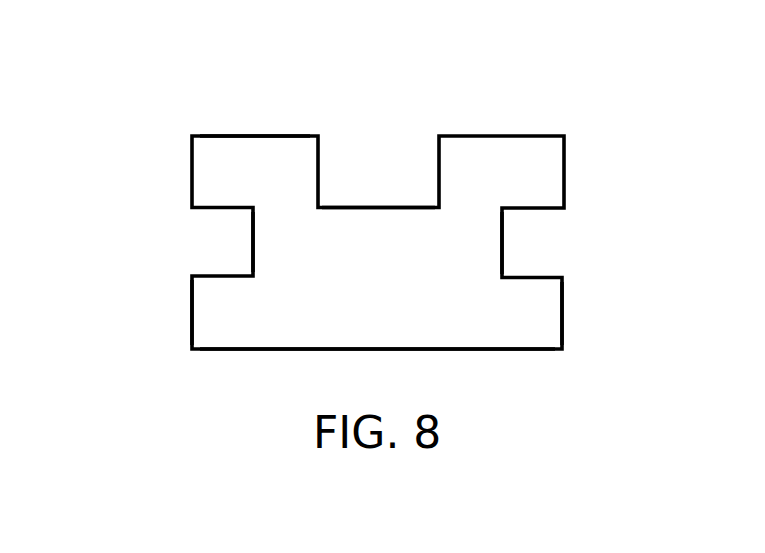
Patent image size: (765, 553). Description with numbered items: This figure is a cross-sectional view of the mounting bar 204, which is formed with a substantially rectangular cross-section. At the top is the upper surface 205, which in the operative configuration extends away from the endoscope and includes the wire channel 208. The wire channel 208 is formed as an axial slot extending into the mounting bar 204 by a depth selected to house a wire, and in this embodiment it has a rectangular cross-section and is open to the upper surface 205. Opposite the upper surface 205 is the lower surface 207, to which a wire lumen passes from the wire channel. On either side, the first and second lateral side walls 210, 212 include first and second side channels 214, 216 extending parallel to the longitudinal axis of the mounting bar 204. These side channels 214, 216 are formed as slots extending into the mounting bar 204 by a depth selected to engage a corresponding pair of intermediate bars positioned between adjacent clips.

The mounting bar 204 is at (136, 92).
The upper surface 205 is at (246, 136).
The wire channel 208 is at (392, 172).
The first side channel 214 is at (227, 253).
The second side channel 216 is at (531, 248).
The first lateral side wall 210 is at (192, 303).
The second lateral side wall 212 is at (562, 312).
The lower surface 207 is at (247, 349).